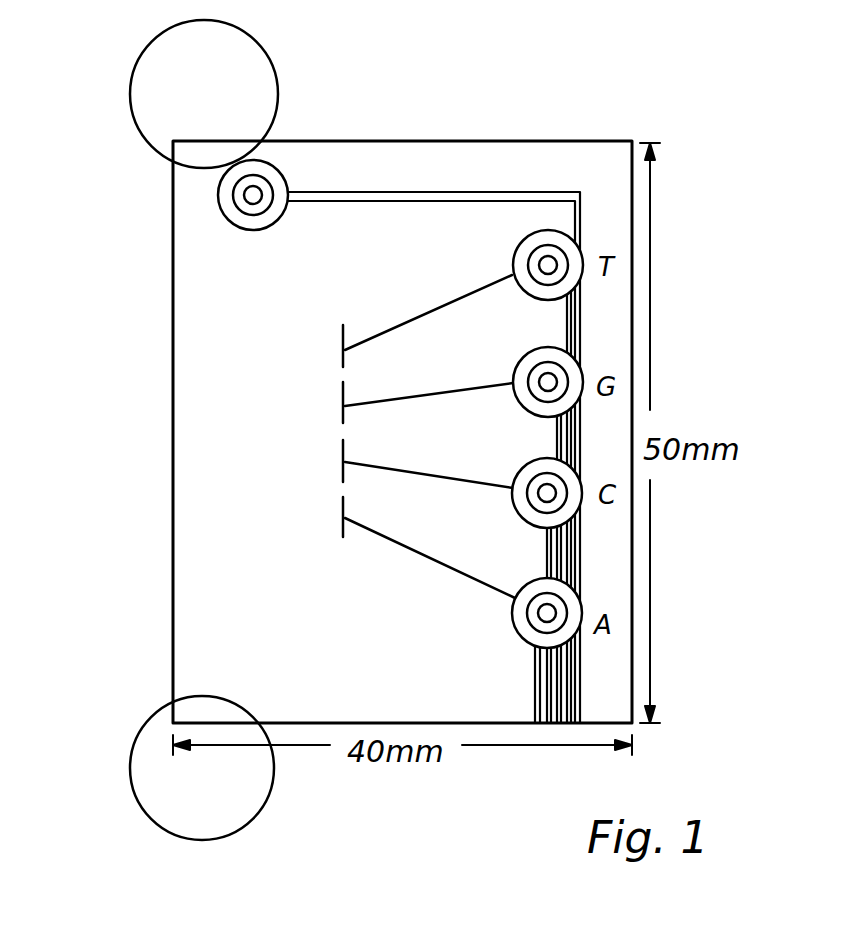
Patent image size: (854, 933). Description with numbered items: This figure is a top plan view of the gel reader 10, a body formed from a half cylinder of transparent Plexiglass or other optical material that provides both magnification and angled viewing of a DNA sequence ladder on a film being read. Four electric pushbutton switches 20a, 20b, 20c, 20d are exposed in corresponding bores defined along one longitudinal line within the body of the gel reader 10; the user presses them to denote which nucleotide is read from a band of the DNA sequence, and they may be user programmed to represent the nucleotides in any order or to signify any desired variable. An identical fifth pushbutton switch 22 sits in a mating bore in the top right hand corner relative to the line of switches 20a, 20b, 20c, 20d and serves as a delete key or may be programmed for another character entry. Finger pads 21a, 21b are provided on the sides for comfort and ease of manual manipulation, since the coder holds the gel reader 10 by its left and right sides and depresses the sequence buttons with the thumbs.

The gel reader 10 is at (150, 332).
The electric pushbutton switch 20a is at (575, 632).
The electric pushbutton switch 20b is at (575, 510).
The electric pushbutton switch 20c is at (575, 363).
The electric pushbutton switch 20d is at (575, 243).
The finger pad 21a is at (255, 792).
The finger pad 21b is at (264, 69).
The fifth pushbutton switch 22 is at (266, 170).